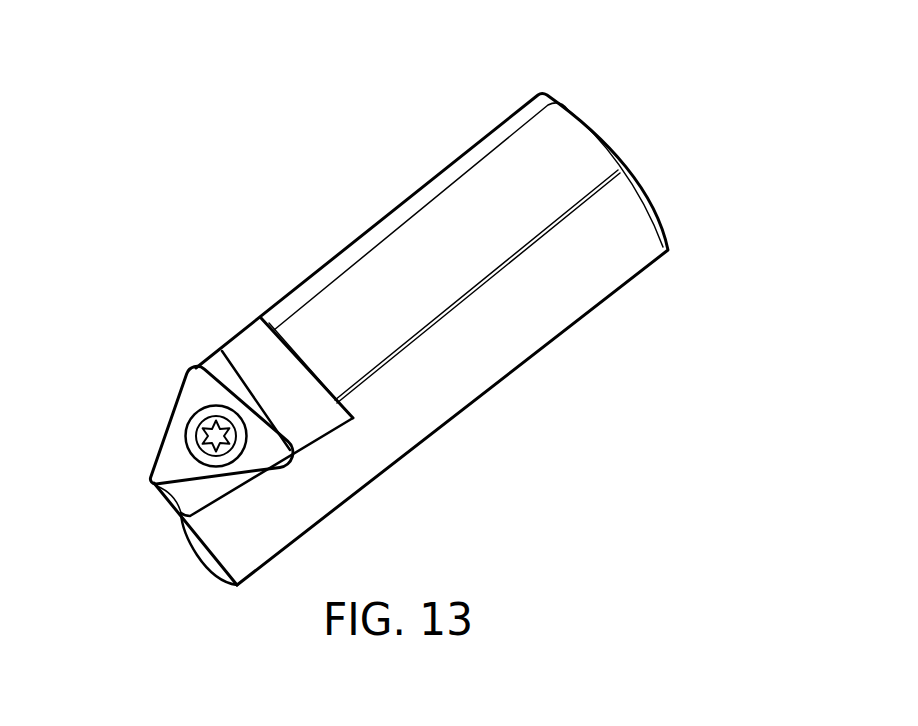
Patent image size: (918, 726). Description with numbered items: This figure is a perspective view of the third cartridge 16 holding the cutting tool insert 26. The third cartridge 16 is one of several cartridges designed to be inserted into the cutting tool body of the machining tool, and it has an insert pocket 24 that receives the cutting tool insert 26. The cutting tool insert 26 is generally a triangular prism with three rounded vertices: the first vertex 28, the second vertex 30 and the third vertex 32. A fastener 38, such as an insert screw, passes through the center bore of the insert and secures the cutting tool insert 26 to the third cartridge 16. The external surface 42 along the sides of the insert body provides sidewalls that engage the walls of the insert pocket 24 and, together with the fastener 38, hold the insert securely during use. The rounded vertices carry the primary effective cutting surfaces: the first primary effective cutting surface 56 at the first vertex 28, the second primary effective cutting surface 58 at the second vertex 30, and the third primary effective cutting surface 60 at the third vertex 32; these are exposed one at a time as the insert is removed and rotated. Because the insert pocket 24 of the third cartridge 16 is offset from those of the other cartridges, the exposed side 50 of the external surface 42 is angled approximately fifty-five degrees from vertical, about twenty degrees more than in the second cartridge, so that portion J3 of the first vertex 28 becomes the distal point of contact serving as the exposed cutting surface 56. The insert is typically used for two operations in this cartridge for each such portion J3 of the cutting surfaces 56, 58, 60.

The third cartridge 16 is at (565, 138).
The insert pocket 24 is at (222, 351).
The cutting tool insert 26 is at (267, 455).
The first vertex 28 is at (155, 502).
The second vertex 30 is at (180, 372).
The third vertex 32 is at (293, 461).
The fastener 38 is at (229, 445).
The external surface 42 is at (158, 440).
The side 50 is at (148, 462).
The first primary effective cutting surface 56 is at (157, 490).
The second primary effective cutting surface 58 is at (190, 368).
The third primary effective cutting surface 60 is at (297, 447).
The portion of the rounded vertex J3 is at (155, 487).